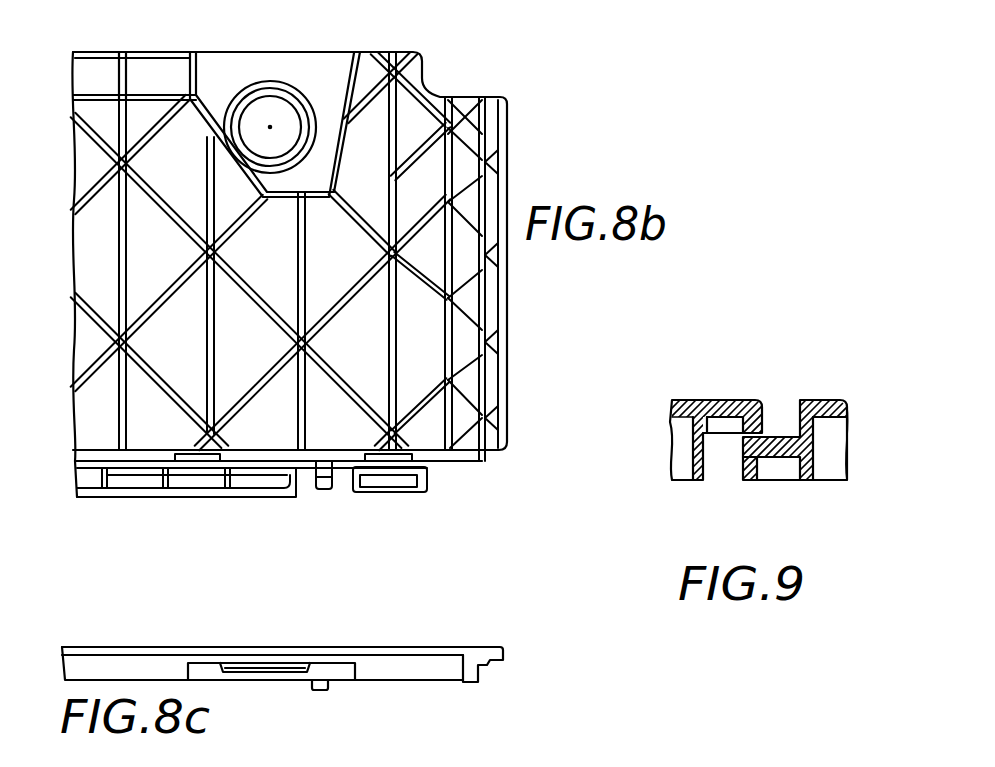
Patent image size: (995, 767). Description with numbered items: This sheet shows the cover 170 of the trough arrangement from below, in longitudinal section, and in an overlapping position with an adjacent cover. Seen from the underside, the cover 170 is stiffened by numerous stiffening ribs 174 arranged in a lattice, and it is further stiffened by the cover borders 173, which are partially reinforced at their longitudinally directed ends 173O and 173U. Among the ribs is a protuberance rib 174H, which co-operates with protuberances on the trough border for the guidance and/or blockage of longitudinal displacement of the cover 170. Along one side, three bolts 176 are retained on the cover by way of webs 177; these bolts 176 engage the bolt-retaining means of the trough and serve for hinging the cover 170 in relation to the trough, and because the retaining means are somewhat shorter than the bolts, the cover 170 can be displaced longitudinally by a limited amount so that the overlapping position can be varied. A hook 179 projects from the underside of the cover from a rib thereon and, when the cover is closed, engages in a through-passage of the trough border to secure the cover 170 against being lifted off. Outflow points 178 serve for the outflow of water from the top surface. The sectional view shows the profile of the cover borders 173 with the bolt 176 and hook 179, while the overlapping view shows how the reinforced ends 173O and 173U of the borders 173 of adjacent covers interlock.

In FIG. 8b, the cover 170 is at (498, 79).
In FIG. 8b, the cover border 173 is at (506, 201).
In FIG. 9, the cover border 173 is at (712, 412).
In FIG. 8c, the cover border 173 is at (459, 649).
In FIG. 9, the longitudinally directed end of cover border 173O is at (764, 409).
In FIG. 9, the longitudinally directed end of cover border 173U is at (749, 481).
In FIG. 8b, the stiffening rib 174 is at (118, 252).
In FIG. 8b, the protuberance rib 174H is at (185, 75).
In FIG. 8b, the bolt 176 is at (408, 494).
In FIG. 8b, the web 177 is at (427, 482).
In FIG. 8b, the outflow point 178 is at (437, 443).
In FIG. 8b, the hook 179 is at (318, 491).